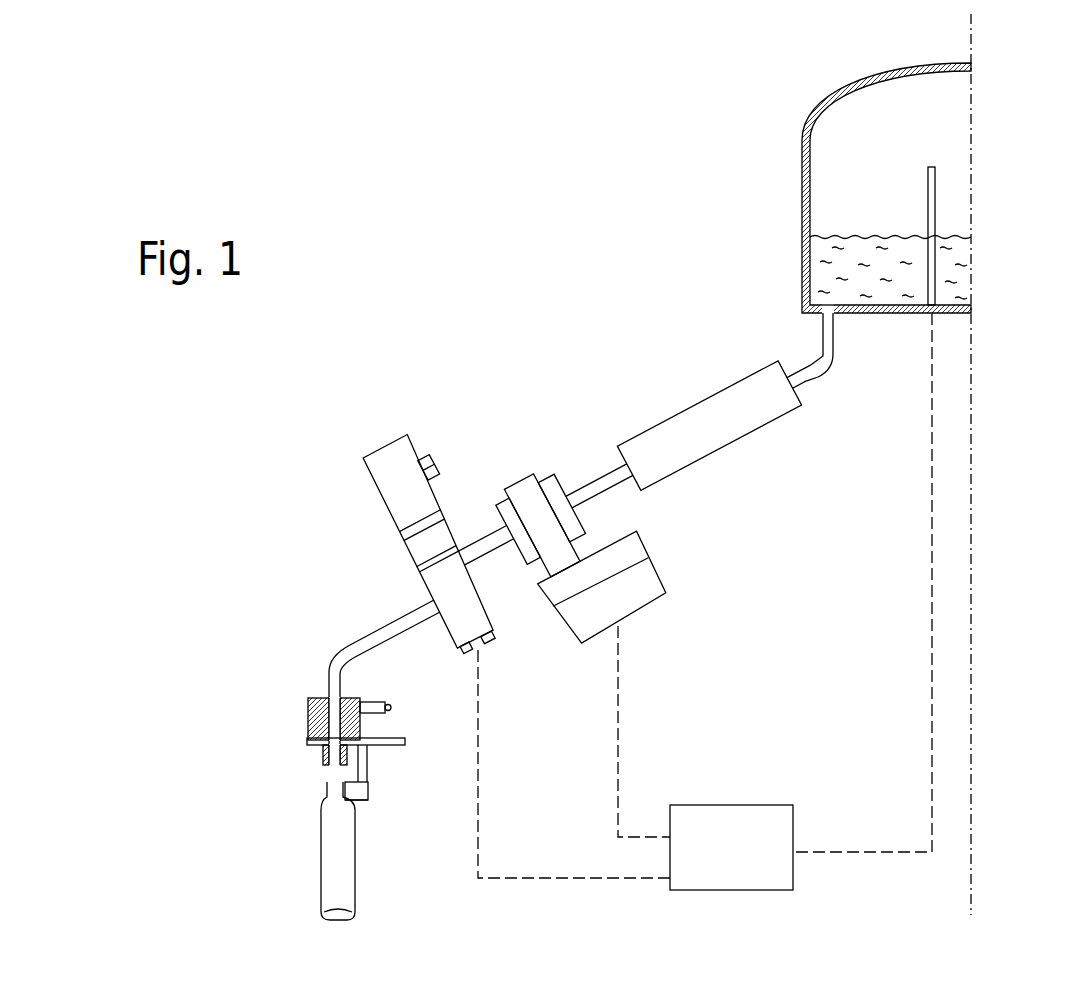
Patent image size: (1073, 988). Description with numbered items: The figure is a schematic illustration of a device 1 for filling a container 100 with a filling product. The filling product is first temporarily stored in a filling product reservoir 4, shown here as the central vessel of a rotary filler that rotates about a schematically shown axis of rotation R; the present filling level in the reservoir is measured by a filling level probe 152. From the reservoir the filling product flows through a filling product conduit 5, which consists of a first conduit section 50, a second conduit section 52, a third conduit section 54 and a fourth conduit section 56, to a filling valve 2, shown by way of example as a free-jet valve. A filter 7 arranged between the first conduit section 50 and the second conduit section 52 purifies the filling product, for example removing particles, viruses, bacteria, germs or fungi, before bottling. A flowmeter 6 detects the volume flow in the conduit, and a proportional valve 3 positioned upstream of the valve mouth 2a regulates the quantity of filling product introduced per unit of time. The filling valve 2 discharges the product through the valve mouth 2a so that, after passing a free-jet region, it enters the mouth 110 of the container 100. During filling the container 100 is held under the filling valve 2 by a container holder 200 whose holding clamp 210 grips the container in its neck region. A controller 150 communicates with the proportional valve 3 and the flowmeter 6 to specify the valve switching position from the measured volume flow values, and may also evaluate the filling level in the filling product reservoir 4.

The device 1 is at (568, 200).
The axis of rotation R is at (973, 48).
The filling valve 2 is at (276, 731).
The valve mouth 2a is at (333, 770).
The proportional valve 3 is at (390, 463).
The filling product reservoir 4 is at (842, 180).
The filling product conduit 5 is at (590, 466).
The flowmeter 6 is at (520, 493).
The filter 7 is at (700, 415).
The first conduit section 50 is at (815, 367).
The second conduit section 52 is at (612, 477).
The third conduit section 54 is at (485, 543).
The fourth conduit section 56 is at (372, 633).
The container 100 is at (345, 880).
The mouth of the container 110 is at (352, 776).
The controller 150 is at (762, 865).
The filling level probe 152 is at (908, 298).
The container holder 200 is at (368, 788).
The holding clamp 210 is at (360, 803).